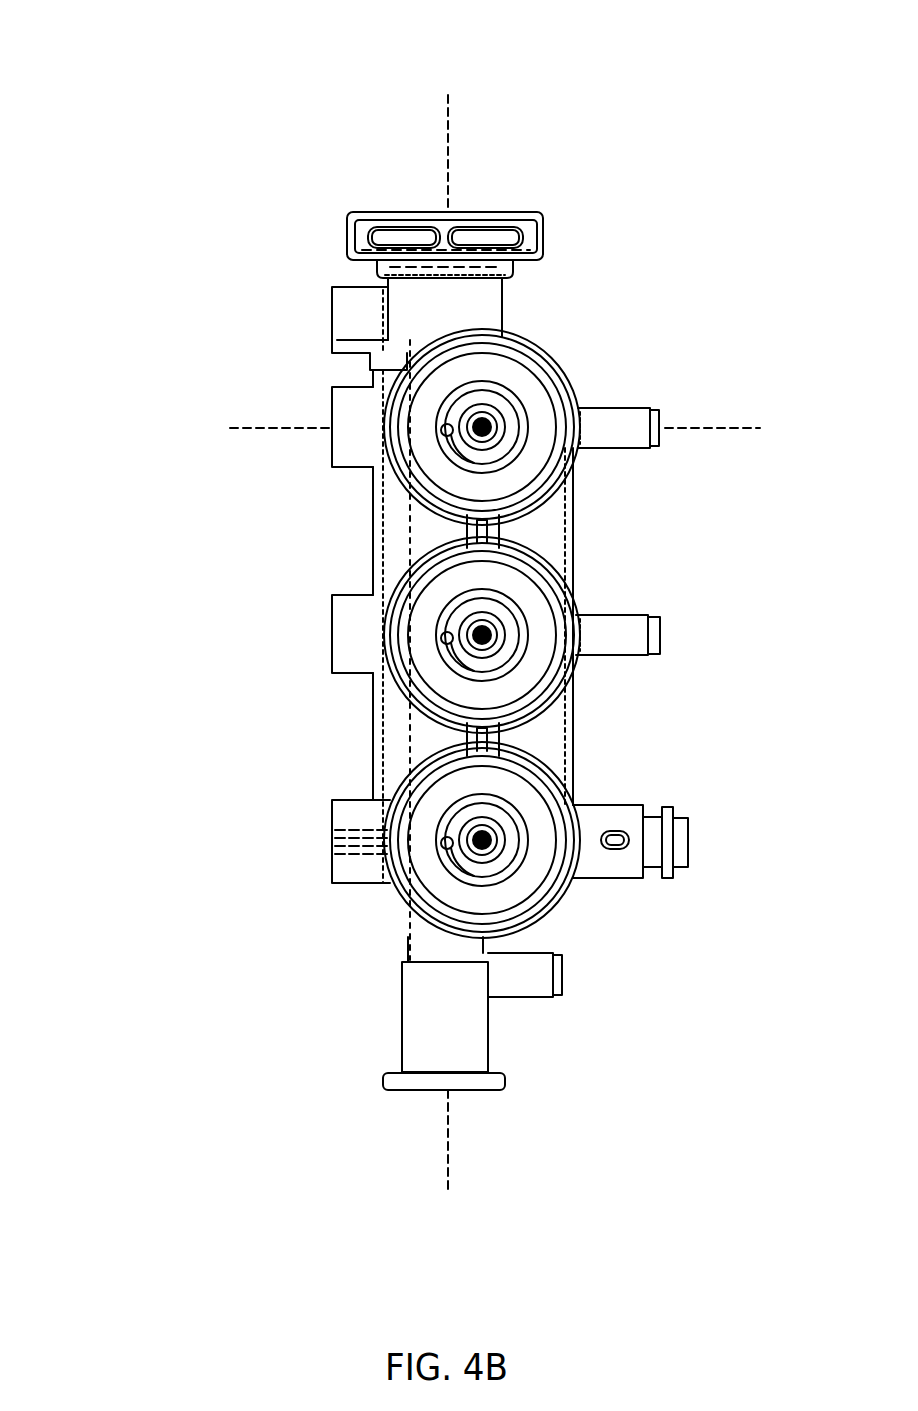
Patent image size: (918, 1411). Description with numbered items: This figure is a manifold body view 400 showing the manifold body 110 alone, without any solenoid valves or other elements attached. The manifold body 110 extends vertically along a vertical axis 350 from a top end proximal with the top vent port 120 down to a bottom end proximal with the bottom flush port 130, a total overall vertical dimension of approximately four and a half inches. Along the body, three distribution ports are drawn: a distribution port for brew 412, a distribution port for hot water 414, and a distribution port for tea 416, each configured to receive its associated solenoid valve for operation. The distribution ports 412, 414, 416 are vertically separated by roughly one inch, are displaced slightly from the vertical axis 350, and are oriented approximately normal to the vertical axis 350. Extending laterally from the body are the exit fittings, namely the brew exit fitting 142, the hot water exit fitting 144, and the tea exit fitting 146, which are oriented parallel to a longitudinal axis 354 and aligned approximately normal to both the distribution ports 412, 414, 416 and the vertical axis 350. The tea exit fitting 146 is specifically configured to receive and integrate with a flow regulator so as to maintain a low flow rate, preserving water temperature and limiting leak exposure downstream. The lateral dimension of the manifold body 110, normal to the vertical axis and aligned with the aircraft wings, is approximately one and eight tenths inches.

The manifold body view 400 is at (80, 120).
The vertical axis 350 is at (449, 128).
The longitudinal axis 354 is at (715, 428).
The top vent port 120 is at (458, 200).
The manifold body 110 is at (487, 318).
The brew distribution port 412 is at (522, 380).
The hot water distribution port 414 is at (525, 597).
The tea distribution port 416 is at (522, 800).
The brew exit fitting 142 is at (613, 420).
The hot water exit fitting 144 is at (610, 623).
The tea exit fitting 146 is at (615, 812).
The bottom flush port 130 is at (453, 1095).